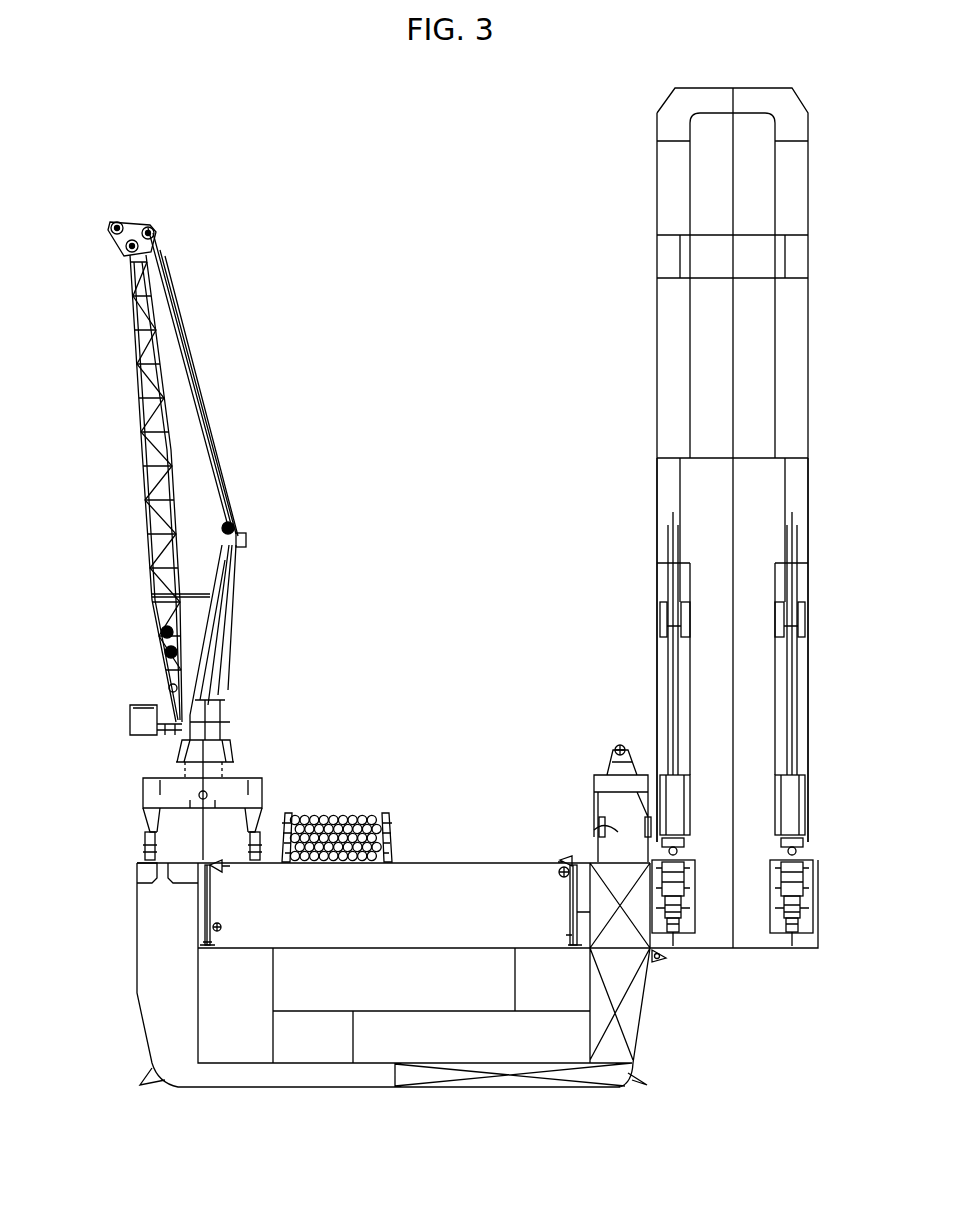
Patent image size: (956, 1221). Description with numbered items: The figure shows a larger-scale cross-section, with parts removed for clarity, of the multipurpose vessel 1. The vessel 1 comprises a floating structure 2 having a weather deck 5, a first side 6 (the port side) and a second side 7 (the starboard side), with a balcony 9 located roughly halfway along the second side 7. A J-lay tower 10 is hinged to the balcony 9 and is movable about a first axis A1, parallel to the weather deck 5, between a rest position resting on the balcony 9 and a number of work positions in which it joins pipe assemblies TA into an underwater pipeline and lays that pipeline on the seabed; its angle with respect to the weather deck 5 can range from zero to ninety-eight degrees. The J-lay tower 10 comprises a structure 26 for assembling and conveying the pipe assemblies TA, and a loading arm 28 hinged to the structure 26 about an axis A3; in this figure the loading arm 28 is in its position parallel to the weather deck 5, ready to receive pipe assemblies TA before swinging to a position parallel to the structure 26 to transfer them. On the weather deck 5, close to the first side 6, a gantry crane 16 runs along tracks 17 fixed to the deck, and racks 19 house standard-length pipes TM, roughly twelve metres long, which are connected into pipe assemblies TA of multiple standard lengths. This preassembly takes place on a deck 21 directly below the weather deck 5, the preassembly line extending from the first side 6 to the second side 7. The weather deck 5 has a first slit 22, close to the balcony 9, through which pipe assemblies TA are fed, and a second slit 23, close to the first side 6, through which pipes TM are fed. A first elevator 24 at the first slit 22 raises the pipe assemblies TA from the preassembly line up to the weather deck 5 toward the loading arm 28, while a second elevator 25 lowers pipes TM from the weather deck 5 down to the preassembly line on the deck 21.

The vessel 1 is at (455, 302).
The floating structure 2 is at (640, 1025).
The weather deck 5 is at (462, 860).
The first side 6 is at (128, 960).
The second side 7 is at (657, 968).
The balcony 9 is at (742, 948).
The J-lay tower 10 is at (768, 68).
The gantry crane 16 is at (267, 352).
The tracks 17 is at (255, 850).
The racks 19 is at (400, 832).
The deck 21 is at (362, 942).
The first slit 22 is at (562, 850).
The second slit 23 is at (228, 870).
The first elevator 24 is at (550, 892).
The second elevator 25 is at (240, 940).
The structure 26 is at (792, 515).
The loading arm 28 is at (600, 778).
The pipe assemblies TA is at (620, 745).
The pipes TM is at (310, 815).
The first axis A1 is at (640, 842).
The axis A3 is at (660, 827).